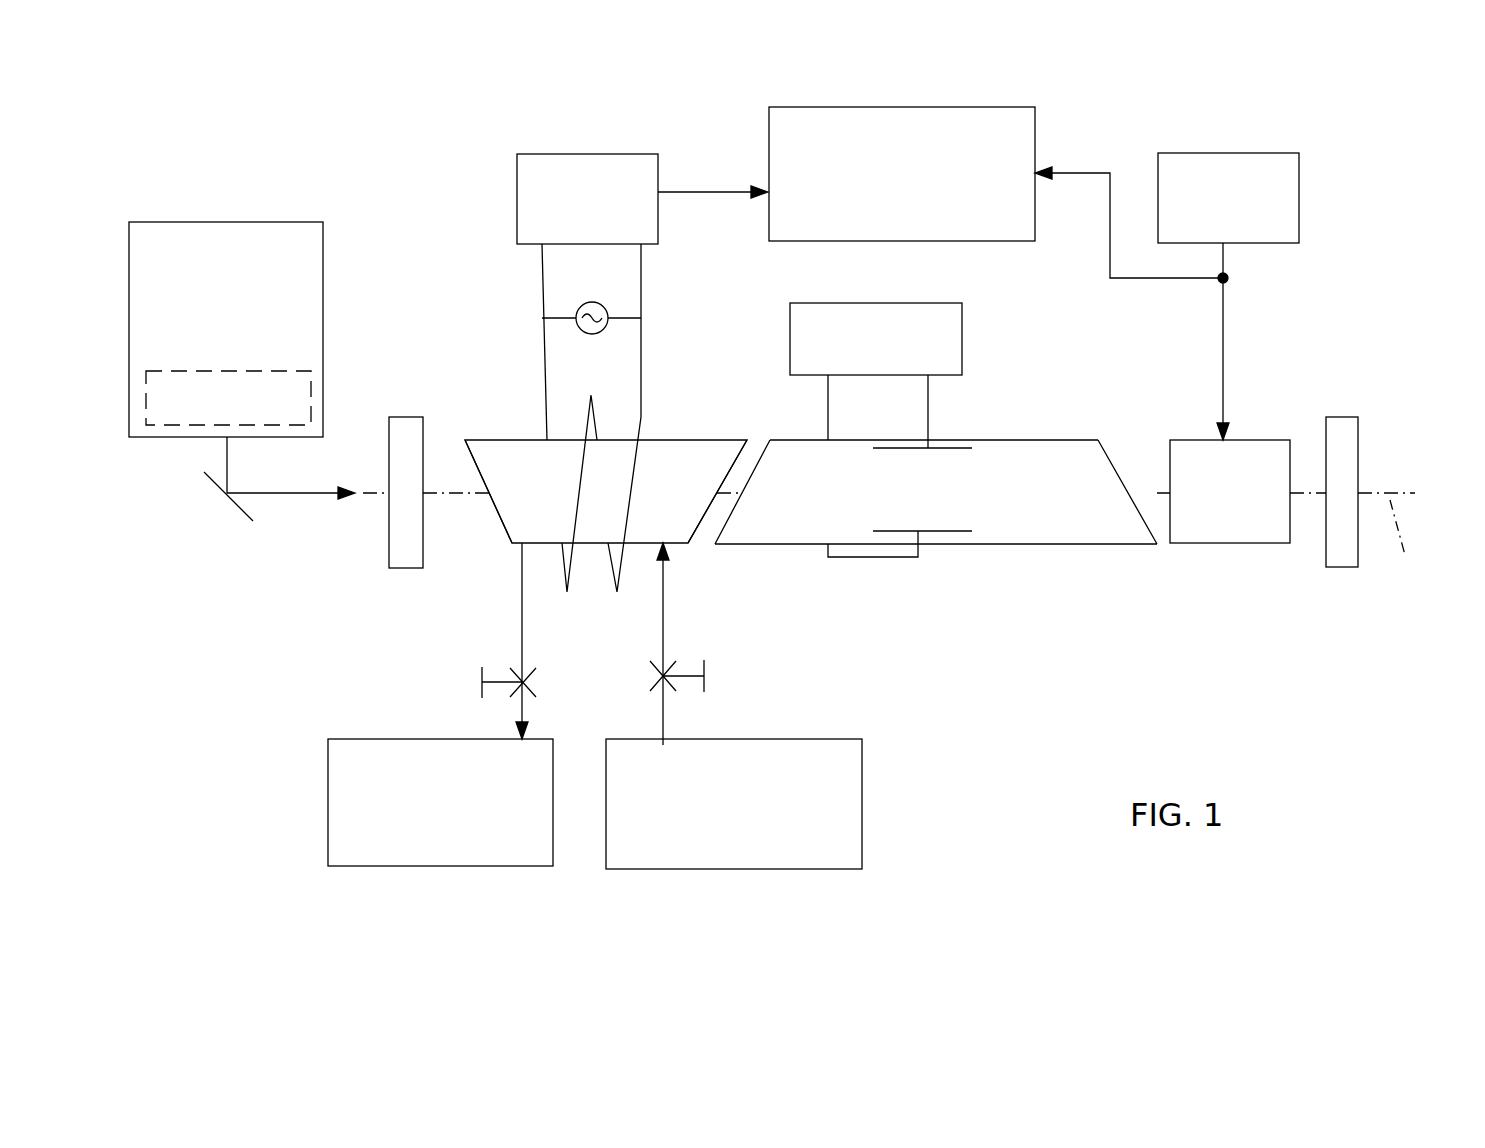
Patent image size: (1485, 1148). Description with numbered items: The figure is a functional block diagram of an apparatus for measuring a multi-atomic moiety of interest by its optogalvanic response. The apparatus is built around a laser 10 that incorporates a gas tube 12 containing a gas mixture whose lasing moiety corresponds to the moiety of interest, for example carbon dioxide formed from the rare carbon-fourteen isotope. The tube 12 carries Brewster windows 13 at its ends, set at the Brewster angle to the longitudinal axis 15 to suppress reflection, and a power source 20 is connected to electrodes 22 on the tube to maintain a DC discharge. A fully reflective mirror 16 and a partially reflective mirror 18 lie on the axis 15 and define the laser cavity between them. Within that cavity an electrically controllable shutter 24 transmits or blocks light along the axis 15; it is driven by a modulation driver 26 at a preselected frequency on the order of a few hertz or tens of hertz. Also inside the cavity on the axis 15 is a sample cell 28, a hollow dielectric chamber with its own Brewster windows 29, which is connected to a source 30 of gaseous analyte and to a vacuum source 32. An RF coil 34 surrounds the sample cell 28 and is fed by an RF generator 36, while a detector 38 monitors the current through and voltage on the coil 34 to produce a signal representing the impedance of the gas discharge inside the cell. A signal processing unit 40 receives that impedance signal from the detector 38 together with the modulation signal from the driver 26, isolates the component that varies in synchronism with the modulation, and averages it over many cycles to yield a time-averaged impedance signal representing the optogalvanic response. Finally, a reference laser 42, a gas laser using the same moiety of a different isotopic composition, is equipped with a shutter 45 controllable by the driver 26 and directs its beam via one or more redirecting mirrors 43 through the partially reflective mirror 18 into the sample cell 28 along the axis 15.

The laser 10 is at (1124, 610).
The gas tube 12 is at (1028, 518).
The Brewster windows 13 is at (1100, 440).
The longitudinal axis 15 is at (1408, 557).
The mirror 16 is at (1347, 428).
The mirror 18 is at (403, 433).
The power source 20 is at (962, 309).
The electrodes 22 is at (903, 578).
The shutter 24 is at (1233, 543).
The modulation driver 26 is at (1198, 170).
The sample cell 28 is at (497, 452).
The Brewster windows 29 is at (738, 452).
The source of gaseous analyte 30 is at (852, 833).
The vacuum source 32 is at (523, 833).
The RF coil 34 is at (640, 417).
The RF generator 36 is at (578, 307).
The detector 38 is at (557, 172).
The signal processing unit 40 is at (913, 128).
The reference laser 42 is at (246, 223).
The redirecting mirrors 43 is at (237, 505).
The shutter 45 is at (163, 365).